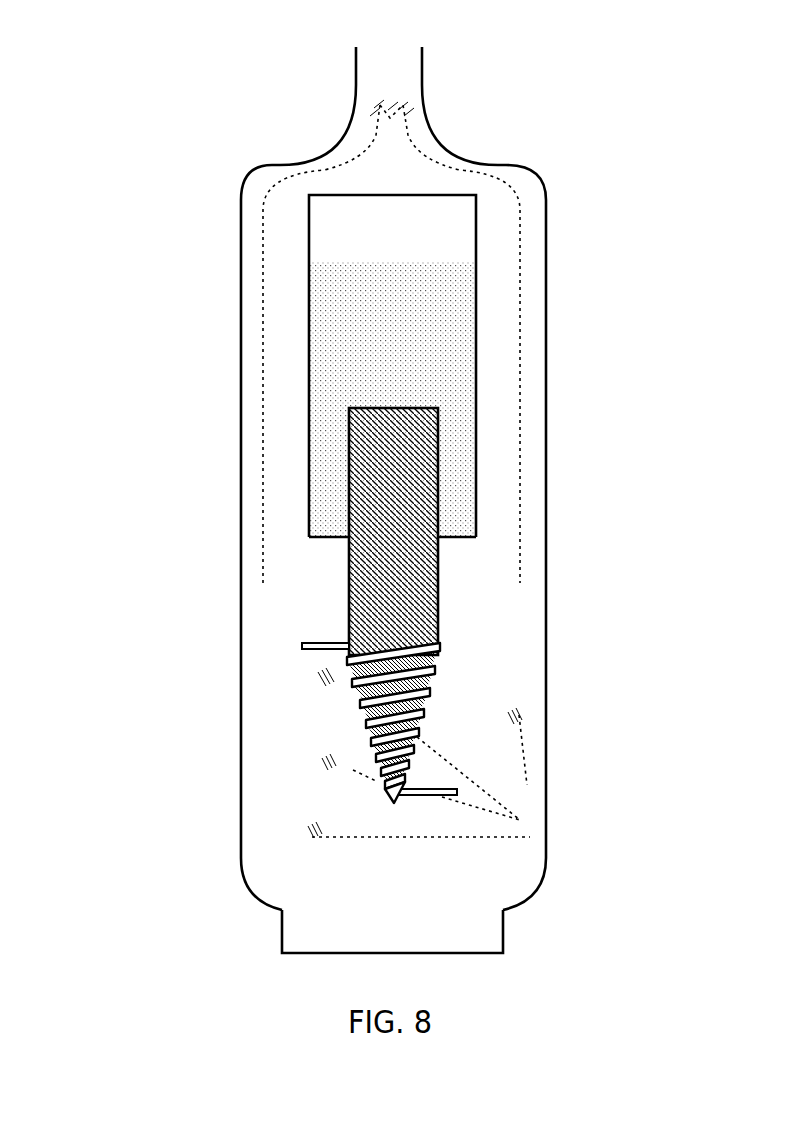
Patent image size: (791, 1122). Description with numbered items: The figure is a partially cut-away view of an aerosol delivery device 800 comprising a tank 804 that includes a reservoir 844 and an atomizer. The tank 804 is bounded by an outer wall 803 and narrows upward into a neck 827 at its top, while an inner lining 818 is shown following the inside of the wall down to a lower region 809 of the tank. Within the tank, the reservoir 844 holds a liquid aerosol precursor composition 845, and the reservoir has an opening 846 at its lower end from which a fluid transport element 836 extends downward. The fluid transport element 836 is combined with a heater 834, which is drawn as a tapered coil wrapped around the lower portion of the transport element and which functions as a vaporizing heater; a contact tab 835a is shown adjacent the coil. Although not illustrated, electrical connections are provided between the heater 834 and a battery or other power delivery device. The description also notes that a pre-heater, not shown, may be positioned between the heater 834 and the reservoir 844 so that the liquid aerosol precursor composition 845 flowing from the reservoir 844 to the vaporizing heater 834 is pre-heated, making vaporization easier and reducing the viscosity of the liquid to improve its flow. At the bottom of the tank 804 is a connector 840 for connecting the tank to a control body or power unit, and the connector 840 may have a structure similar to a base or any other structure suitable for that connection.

The x-ray tube assembly 800 is at (150, 58).
The evacuation neck 827 is at (423, 73).
The tank 804 is at (200, 194).
The envelope wall 803 is at (241, 346).
The connector 840 is at (505, 940).
The inner lining 818 is at (553, 837).
The bottom region 809 is at (347, 794).
The reservoir 844 is at (472, 361).
The liquid aerosol precursor composition 845 is at (428, 268).
The reservoir opening 846 is at (447, 548).
The fluid transport element 836 is at (355, 612).
The contact tab 835a is at (408, 758).
The heater 834 is at (348, 710).